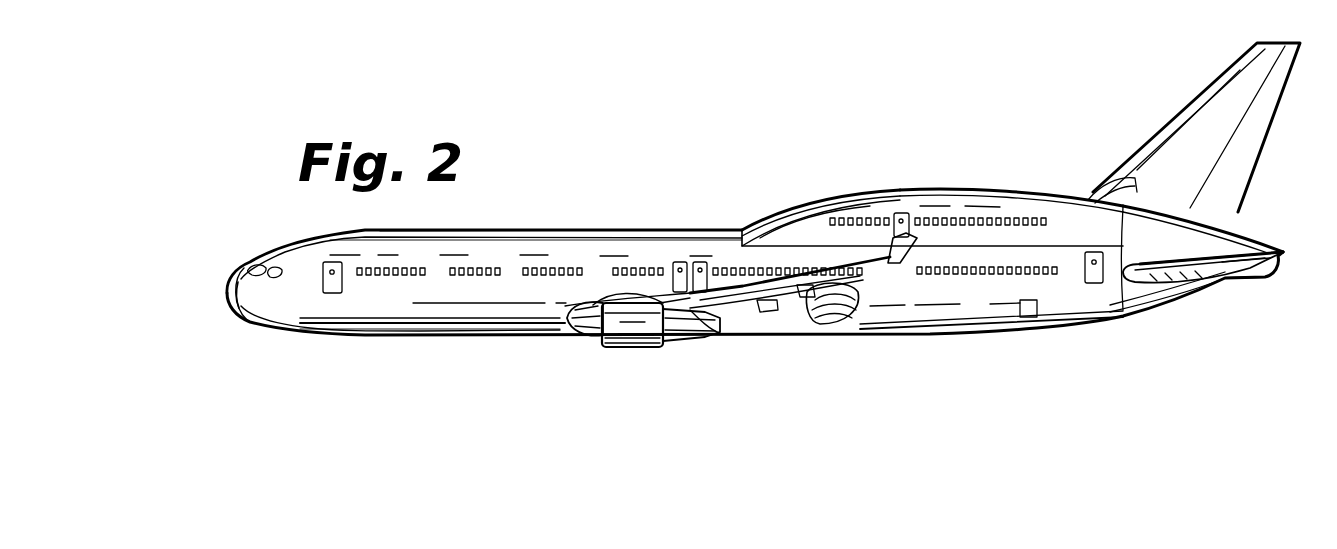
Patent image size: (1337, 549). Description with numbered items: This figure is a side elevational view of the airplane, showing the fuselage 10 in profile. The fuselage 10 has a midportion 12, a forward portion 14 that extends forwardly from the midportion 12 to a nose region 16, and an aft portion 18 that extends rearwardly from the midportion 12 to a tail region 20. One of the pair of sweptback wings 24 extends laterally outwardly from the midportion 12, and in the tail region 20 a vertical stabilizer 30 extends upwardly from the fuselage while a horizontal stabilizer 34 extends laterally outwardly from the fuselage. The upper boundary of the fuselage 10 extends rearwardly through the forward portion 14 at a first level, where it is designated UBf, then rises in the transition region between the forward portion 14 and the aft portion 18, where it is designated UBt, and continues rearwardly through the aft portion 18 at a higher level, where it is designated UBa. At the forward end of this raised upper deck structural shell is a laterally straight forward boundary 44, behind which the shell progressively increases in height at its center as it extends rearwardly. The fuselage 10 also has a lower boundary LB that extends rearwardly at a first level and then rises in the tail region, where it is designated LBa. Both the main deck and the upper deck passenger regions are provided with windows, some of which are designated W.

The fuselage 10 is at (540, 350).
The midportion 12 is at (714, 239).
The forward portion 14 is at (445, 237).
The nose region 16 is at (216, 297).
The aft portion 18 is at (981, 189).
The tail region 20 is at (1240, 213).
The sweptback wing 24 is at (797, 294).
The vertical stabilizer 30 is at (1217, 133).
The horizontal stabilizer 34 is at (1218, 265).
The forward boundary 44 is at (742, 231).
The lower boundary LB is at (446, 340).
The lower boundary in the tail region LBa is at (1110, 323).
The upper boundary in the forward portion UBf is at (553, 231).
The upper boundary in the transition region UBt is at (838, 192).
The upper boundary in the aft portion UBa is at (1013, 190).
The windows W is at (413, 277).